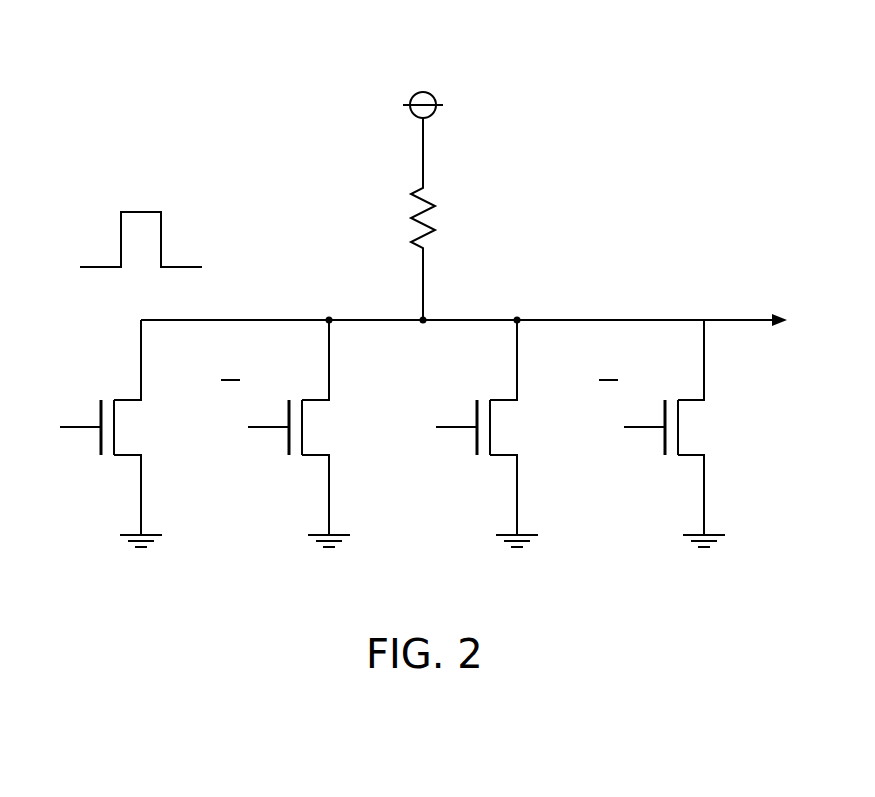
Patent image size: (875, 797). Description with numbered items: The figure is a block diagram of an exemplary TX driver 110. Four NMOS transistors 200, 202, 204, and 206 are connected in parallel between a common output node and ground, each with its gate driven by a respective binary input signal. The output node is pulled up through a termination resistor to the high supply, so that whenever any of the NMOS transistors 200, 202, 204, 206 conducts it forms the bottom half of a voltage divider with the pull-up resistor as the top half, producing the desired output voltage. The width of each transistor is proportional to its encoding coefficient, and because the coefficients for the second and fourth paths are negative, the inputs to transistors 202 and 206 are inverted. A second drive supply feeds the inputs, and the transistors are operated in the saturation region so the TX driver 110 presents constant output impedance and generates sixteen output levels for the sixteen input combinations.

The TX driver 110 is at (226, 93).
The NMOS transistor 200 is at (127, 458).
The NMOS transistor 202 is at (315, 458).
The NMOS transistor 204 is at (503, 458).
The NMOS transistor 206 is at (691, 458).